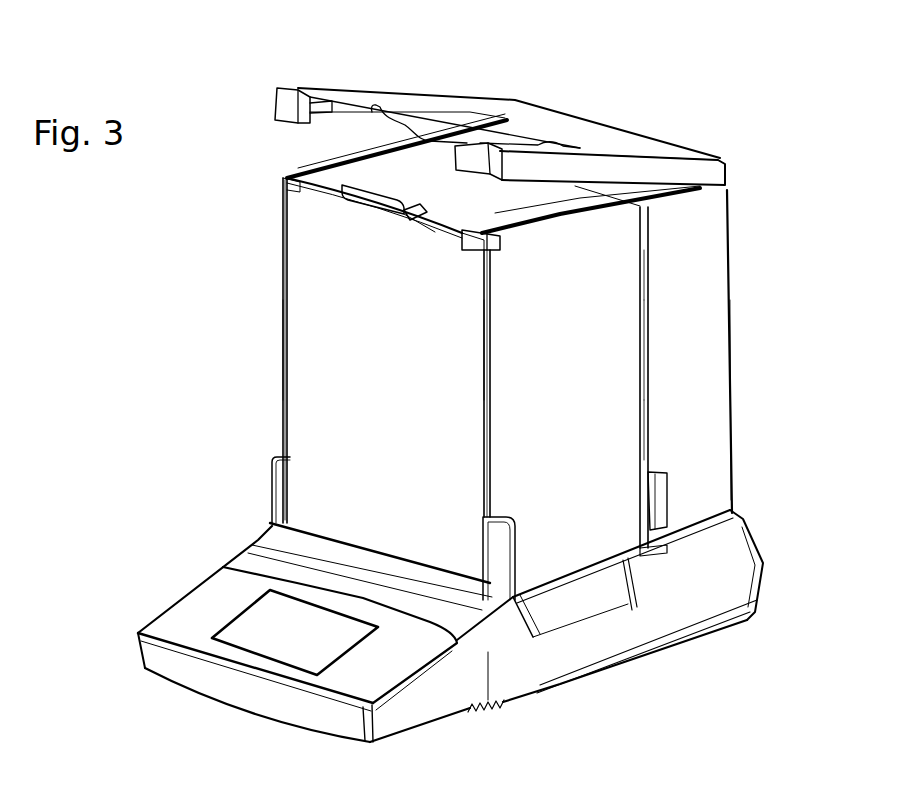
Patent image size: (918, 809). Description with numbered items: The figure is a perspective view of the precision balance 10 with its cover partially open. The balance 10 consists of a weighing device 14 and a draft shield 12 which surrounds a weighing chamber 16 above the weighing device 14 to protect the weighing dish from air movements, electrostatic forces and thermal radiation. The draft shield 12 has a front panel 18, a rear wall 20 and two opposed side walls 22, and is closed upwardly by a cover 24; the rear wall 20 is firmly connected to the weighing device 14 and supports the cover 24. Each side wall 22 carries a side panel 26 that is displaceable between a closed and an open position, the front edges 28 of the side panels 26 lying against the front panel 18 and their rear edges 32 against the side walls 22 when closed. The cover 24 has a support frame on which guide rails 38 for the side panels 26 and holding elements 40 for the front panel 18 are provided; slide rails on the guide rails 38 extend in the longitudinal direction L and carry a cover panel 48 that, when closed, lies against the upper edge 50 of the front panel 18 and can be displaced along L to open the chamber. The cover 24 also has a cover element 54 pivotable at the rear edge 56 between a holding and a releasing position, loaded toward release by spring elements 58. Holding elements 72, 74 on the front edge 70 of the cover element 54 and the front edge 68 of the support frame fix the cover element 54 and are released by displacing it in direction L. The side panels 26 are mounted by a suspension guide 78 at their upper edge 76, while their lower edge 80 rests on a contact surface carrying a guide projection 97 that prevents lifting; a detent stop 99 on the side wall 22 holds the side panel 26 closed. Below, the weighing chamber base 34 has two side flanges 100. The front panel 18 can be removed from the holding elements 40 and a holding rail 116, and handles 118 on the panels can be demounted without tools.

The precision balance 10 is at (765, 148).
The draft shield 12 is at (245, 384).
The weighing device 14 is at (735, 597).
The weighing chamber 16 is at (328, 398).
The front panel 18 is at (310, 330).
The rear wall 20 is at (733, 463).
The side walls 22 is at (710, 377).
The cover 24 is at (630, 138).
The side panels 26 is at (597, 325).
The front edges 28 is at (292, 443).
The rear edges 32 is at (650, 417).
The weighing chamber base 34 is at (573, 577).
The guide rails 38 is at (317, 167).
The holding elements 40 is at (290, 183).
The cover panel 48 is at (427, 210).
The upper edge 50 is at (432, 232).
The cover element 54 is at (666, 150).
The rear edge 56 is at (716, 157).
The spring elements 58 is at (403, 122).
The front edge of the support frame 68 is at (490, 255).
The front edge of the cover element 70 is at (468, 153).
The holding element 72 is at (310, 115).
The holding element 74 is at (297, 167).
The upper edge 76 is at (600, 220).
The suspension guide 78 is at (447, 200).
The lower edge 80 is at (610, 560).
The guide projection 97 is at (653, 548).
The detent stop 99 is at (652, 493).
The side flanges 100 is at (547, 623).
The holding rail 116 is at (397, 573).
The handles 118 is at (370, 210).
The longitudinal direction L is at (368, 46).